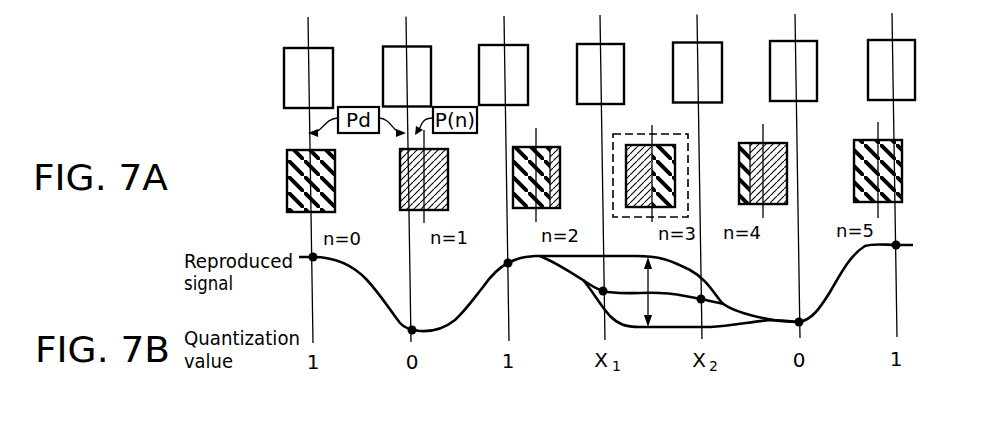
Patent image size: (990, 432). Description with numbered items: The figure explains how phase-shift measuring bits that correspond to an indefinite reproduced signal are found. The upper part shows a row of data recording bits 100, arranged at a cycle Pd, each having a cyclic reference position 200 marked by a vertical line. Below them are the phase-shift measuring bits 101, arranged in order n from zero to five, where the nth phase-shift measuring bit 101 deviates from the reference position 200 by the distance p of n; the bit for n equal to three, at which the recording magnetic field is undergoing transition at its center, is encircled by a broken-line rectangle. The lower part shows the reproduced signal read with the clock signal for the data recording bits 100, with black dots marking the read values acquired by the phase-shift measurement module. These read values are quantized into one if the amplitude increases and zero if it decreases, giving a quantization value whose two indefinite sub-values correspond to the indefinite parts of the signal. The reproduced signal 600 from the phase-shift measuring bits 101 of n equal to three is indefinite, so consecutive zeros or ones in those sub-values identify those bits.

In FIG. 7A, the cyclic reference position 200 is at (406, 33).
In FIG. 7A, the data recording bit 100 is at (383, 88).
In FIG. 7A, the phase-shift measuring bit 101 is at (335, 172).
In FIG. 7B, the reproduced signal 600 is at (638, 332).